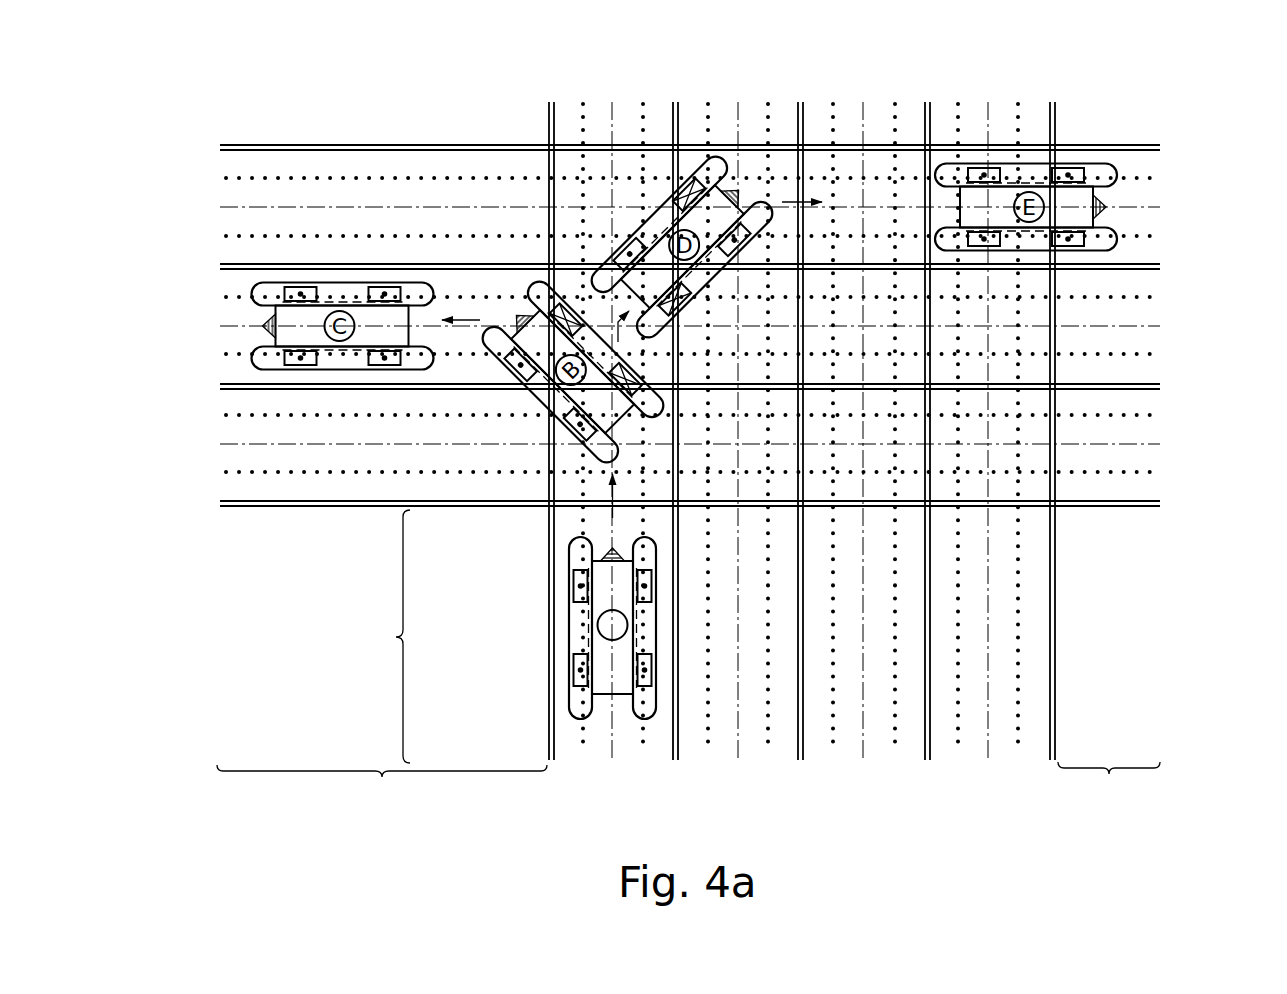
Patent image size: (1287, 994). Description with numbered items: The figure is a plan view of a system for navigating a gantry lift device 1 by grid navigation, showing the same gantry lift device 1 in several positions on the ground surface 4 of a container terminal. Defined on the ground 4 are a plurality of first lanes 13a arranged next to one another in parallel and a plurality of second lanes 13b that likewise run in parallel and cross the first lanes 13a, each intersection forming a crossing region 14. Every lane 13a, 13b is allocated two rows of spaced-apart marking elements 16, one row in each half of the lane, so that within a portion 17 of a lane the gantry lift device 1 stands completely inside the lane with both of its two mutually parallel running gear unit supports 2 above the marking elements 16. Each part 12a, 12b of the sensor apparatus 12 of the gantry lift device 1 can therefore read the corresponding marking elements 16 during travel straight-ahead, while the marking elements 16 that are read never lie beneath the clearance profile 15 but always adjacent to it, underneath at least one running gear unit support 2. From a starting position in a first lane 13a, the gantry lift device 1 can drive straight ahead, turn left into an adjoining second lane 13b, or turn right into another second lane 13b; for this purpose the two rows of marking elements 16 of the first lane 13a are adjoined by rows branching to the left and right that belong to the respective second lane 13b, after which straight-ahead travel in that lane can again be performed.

The gantry lift device 1 is at (612, 622).
The running gear unit supports 2 is at (580, 646).
The ground surface 4 is at (1152, 257).
The sensor apparatus 12 is at (606, 380).
The part of the sensor apparatus 12a is at (1057, 165).
The part of the sensor apparatus 12b is at (381, 285).
The first lane 13a is at (675, 762).
The second lane 13b is at (1170, 147).
The crossing region 14 is at (573, 287).
The clearance profile 15 is at (605, 703).
The marking elements 16 is at (593, 113).
The portion 17 is at (688, 664).